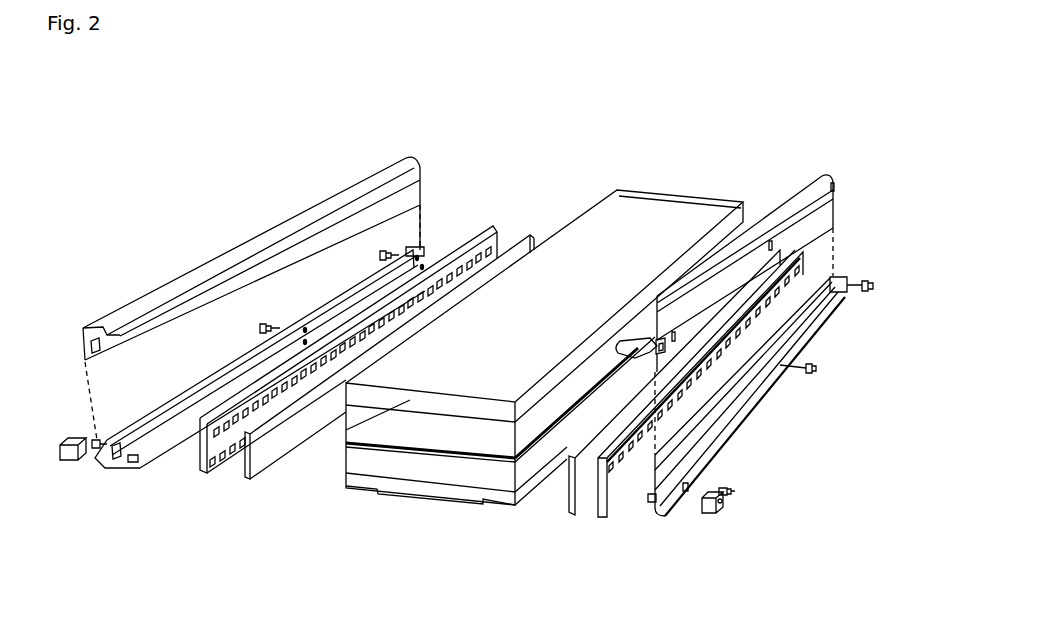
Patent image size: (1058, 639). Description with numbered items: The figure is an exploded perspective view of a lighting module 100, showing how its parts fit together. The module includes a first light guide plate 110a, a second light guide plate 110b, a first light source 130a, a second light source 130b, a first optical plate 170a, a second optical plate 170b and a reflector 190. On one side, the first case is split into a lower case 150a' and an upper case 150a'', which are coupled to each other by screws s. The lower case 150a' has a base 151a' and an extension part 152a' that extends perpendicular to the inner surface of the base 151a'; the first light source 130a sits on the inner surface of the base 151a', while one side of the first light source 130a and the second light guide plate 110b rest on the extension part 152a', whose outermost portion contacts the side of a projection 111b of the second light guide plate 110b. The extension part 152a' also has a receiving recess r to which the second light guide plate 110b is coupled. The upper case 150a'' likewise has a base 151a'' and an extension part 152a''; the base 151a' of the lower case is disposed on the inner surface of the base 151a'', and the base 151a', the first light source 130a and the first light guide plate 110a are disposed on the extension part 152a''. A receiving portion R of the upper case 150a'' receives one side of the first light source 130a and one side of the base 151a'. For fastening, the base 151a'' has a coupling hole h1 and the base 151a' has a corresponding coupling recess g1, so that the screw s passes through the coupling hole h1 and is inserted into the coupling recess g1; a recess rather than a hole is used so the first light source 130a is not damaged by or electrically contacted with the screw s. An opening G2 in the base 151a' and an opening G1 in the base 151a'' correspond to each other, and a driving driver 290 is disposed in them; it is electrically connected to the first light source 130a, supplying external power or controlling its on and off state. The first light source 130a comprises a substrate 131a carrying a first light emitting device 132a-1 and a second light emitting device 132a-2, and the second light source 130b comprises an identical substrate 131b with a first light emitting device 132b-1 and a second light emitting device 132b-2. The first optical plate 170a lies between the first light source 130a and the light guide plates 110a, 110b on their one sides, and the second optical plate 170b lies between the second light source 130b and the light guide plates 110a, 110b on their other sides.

The lighting module 100 is at (232, 63).
The upper case 150a'' is at (760, 208).
The extension part 152a'' is at (745, 225).
The base 151a'' is at (846, 187).
The coupling hole h1 is at (672, 335).
The opening G1 is at (657, 343).
The receiving portion R is at (622, 350).
The first light guide plate 110a is at (430, 390).
The reflector 190 is at (346, 444).
The opening G2 is at (118, 466).
The receiving recess r is at (133, 463).
The substrate 131b is at (203, 470).
The second light emitting device 132b-2 is at (213, 460).
The first light emitting device 132b-1 is at (216, 434).
The second light source 130b is at (258, 522).
The second optical plate 170b is at (280, 440).
The second light guide plate 110b is at (360, 490).
The projection 111b is at (430, 497).
The first optical plate 170a is at (567, 508).
The first light emitting device 132a-1 is at (597, 468).
The second light emitting device 132a-2 is at (600, 478).
The substrate 131a is at (604, 516).
The first light source 130a is at (600, 608).
The extension part 152a' is at (722, 423).
The base 151a' is at (679, 512).
The lower case 150a' is at (731, 446).
The coupling recess g1 is at (688, 487).
The screw s is at (735, 491).
The driving driver 290 is at (728, 513).